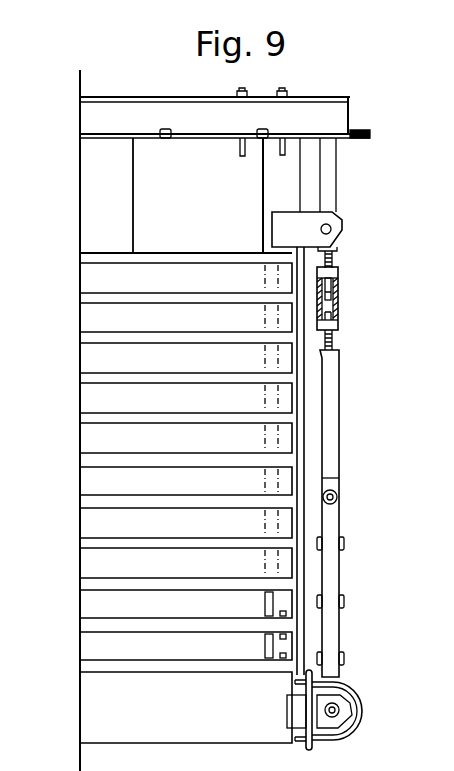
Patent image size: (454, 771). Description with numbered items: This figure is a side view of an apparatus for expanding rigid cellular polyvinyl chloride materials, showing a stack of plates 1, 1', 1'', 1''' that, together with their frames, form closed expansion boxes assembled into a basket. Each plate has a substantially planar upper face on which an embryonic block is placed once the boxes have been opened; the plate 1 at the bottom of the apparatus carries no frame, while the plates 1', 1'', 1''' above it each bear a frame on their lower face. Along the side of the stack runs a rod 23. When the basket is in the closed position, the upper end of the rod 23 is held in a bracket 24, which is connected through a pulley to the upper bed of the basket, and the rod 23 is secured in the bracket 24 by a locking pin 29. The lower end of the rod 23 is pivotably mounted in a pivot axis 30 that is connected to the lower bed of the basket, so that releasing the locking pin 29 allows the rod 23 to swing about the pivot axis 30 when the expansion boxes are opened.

The plate 1 is at (186, 705).
The plate 1' is at (186, 642).
The plate 1'' is at (186, 602).
The plate 1''' is at (186, 560).
The rod 23 is at (330, 438).
The bracket 24 is at (328, 168).
The locking pin 29 is at (331, 229).
The pivot axis 30 is at (339, 710).